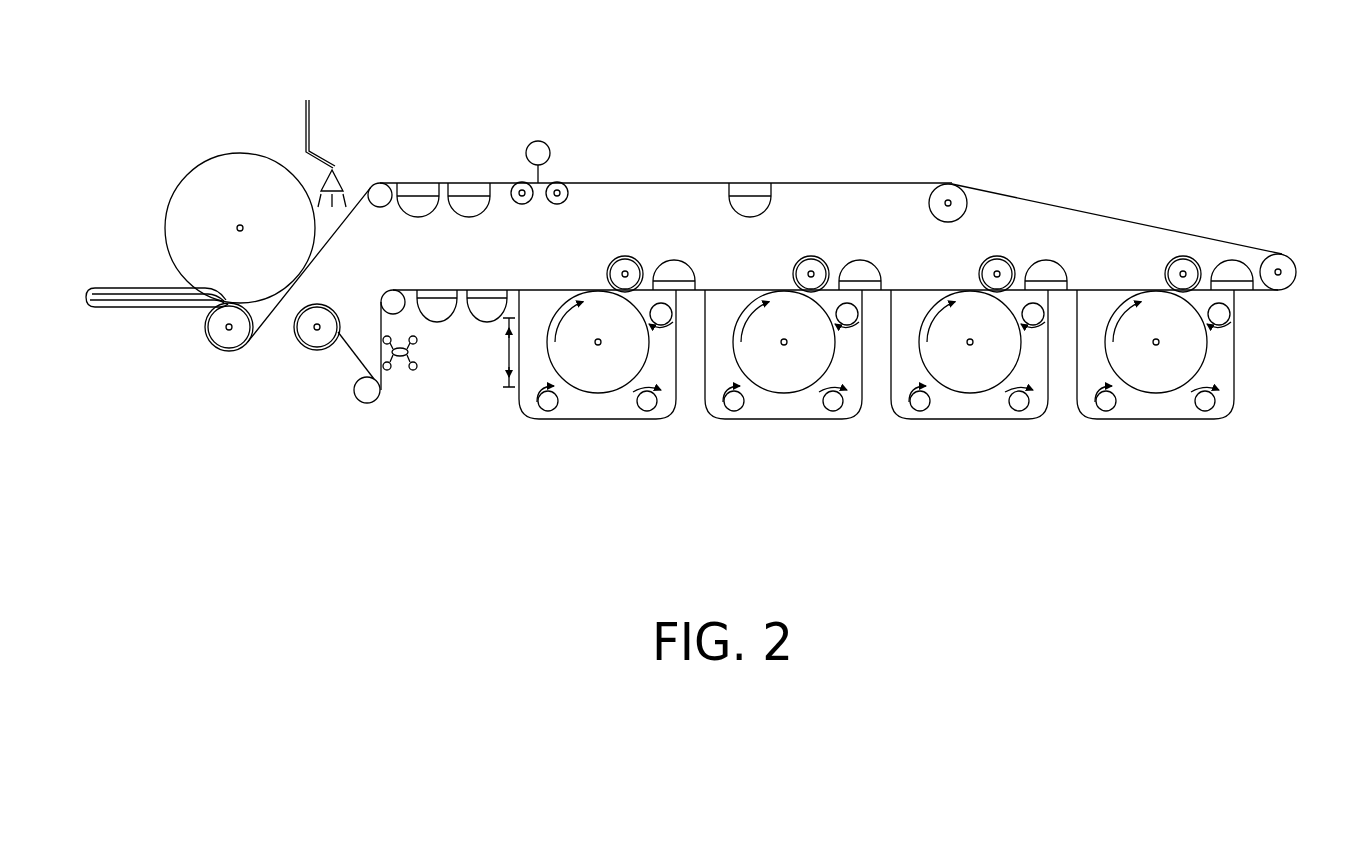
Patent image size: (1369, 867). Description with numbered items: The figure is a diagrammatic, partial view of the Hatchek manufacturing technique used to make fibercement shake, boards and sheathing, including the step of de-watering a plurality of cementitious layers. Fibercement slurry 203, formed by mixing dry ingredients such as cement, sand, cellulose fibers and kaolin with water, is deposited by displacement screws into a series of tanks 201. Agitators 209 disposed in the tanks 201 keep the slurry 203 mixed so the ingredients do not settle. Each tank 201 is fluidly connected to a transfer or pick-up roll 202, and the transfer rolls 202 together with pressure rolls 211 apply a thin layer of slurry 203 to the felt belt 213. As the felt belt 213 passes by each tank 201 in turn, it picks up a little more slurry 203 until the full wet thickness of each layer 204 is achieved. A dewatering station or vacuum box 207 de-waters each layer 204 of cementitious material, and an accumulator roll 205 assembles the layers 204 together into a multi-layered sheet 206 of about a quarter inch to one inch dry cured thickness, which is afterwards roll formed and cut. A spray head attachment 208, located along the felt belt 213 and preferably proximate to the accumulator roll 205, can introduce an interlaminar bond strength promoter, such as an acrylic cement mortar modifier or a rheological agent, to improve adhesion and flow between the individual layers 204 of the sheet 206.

The tank 201 is at (587, 422).
The transfer roll 202 is at (560, 352).
The slurry 203 is at (612, 408).
The layer 204 is at (88, 309).
The accumulator roll 205 is at (197, 168).
The multi-layered sheet 206 is at (100, 287).
The vacuum box 207 is at (491, 308).
The spray head attachment 208 is at (308, 117).
The agitator 209 is at (672, 315).
The pressure roll 211 is at (803, 257).
The felt belt 213 is at (543, 289).